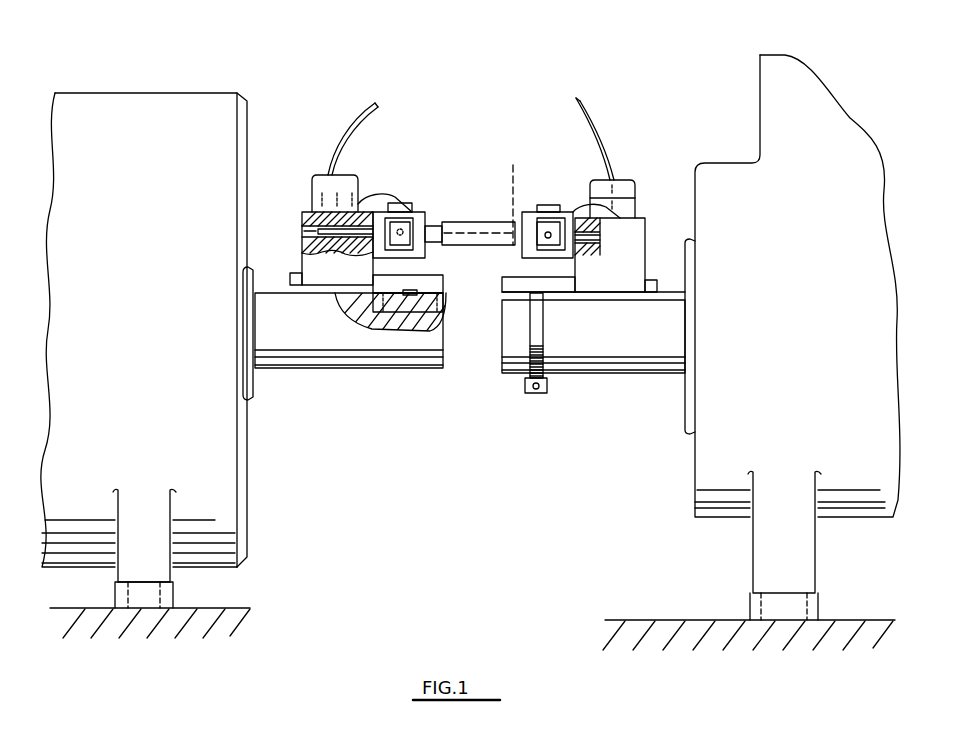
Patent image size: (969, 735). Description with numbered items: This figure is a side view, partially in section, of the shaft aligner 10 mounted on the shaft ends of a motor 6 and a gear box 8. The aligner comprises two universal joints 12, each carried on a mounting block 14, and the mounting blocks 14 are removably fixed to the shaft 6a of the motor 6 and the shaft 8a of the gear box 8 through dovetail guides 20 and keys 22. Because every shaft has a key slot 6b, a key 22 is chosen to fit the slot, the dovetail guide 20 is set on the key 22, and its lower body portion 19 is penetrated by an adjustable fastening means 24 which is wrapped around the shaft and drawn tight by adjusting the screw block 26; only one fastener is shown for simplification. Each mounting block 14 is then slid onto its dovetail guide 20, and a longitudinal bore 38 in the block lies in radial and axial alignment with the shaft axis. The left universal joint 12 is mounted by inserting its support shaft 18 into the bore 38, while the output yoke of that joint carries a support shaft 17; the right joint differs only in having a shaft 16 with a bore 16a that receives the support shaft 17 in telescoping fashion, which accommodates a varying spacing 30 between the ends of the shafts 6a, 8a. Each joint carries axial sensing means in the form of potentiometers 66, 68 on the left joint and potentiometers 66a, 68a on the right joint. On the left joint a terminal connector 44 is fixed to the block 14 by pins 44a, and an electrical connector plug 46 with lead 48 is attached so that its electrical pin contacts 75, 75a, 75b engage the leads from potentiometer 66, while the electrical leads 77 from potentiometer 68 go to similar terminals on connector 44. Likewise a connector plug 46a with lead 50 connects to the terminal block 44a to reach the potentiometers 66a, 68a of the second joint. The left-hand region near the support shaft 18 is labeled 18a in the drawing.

The shaft aligner 10 is at (604, 58).
The motor 6 is at (200, 91).
The gear box 8 is at (727, 160).
The shaft 6a is at (353, 366).
The key slot 6b is at (360, 309).
The shaft 8a is at (622, 361).
The universal joint 12 is at (406, 194).
The mounting block 14 is at (300, 221).
The shaft 16 is at (470, 219).
The bore 16a is at (511, 194).
The support shaft 17 is at (433, 224).
The support shaft 18 is at (306, 236).
The bore 18a is at (597, 240).
The lower body portion 19 is at (440, 306).
The dovetail guide 20 is at (500, 279).
The key 22 is at (503, 296).
The adjustable fastening means 24 is at (530, 352).
The screw block 26 is at (535, 393).
The spacing 30 is at (464, 370).
The bore 38 is at (300, 250).
The terminal connector 44 is at (300, 206).
The terminal block 44a is at (640, 206).
The electrical connector plug 46 is at (318, 174).
The connector plug 46a is at (628, 179).
The electrical lead 48 is at (368, 105).
The electrical lead 50 is at (590, 113).
The potentiometer 66 is at (398, 242).
The potentiometer 66a is at (553, 247).
The potentiometer 68 is at (410, 210).
The potentiometer 68a is at (565, 211).
The electrical pin contact 75 is at (305, 175).
The electrical pin contact 75a is at (345, 195).
The electrical pin contact 75b is at (365, 196).
The electrical leads 77 is at (380, 196).